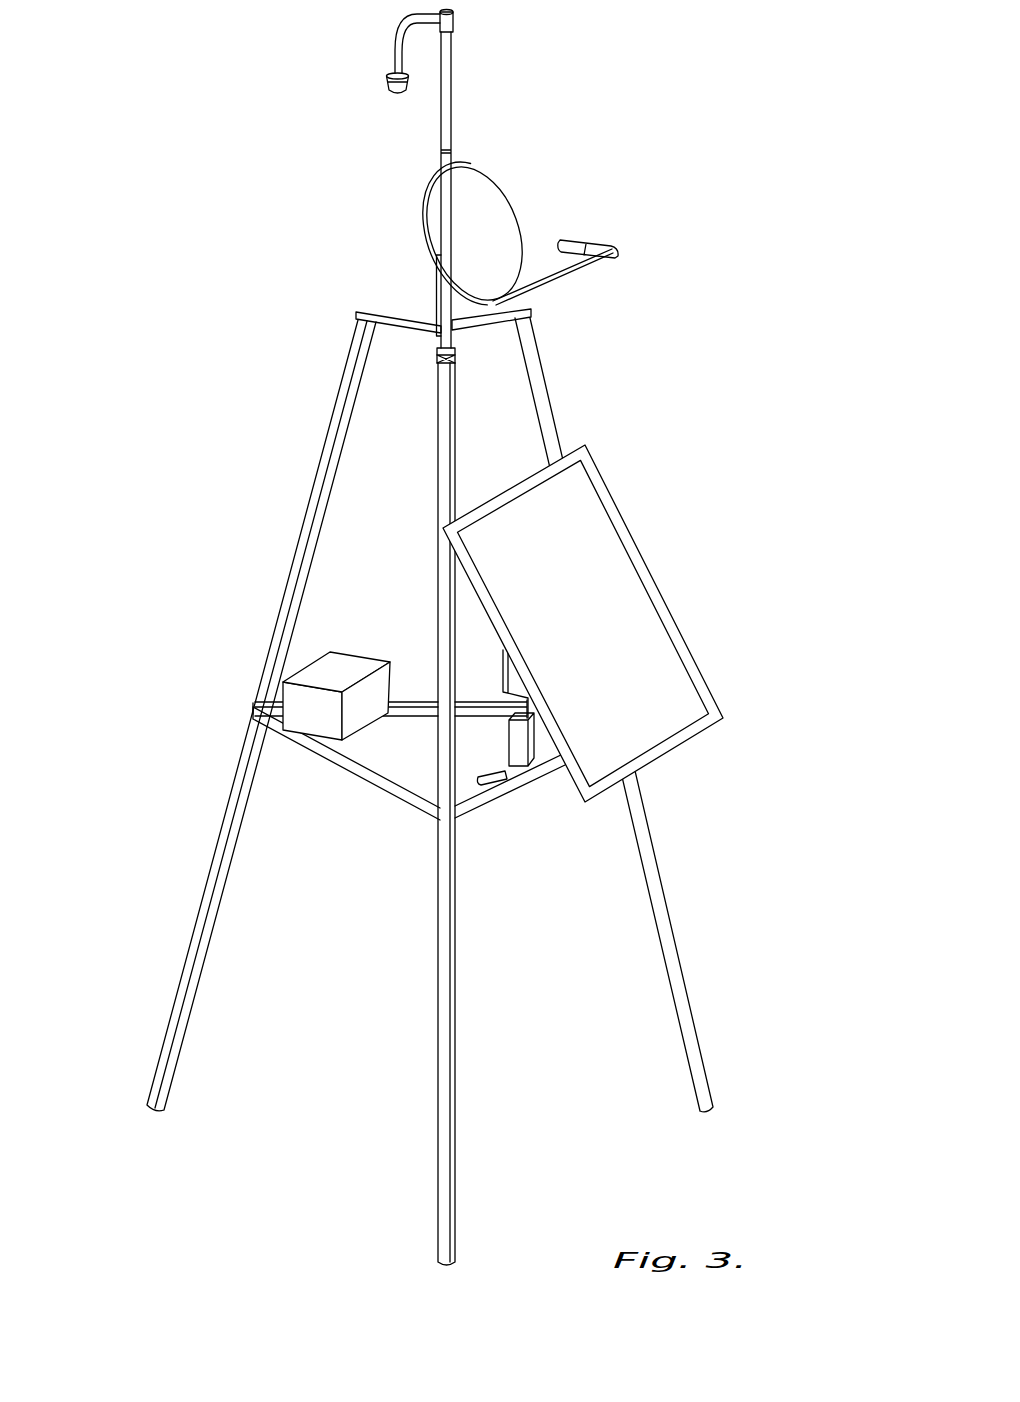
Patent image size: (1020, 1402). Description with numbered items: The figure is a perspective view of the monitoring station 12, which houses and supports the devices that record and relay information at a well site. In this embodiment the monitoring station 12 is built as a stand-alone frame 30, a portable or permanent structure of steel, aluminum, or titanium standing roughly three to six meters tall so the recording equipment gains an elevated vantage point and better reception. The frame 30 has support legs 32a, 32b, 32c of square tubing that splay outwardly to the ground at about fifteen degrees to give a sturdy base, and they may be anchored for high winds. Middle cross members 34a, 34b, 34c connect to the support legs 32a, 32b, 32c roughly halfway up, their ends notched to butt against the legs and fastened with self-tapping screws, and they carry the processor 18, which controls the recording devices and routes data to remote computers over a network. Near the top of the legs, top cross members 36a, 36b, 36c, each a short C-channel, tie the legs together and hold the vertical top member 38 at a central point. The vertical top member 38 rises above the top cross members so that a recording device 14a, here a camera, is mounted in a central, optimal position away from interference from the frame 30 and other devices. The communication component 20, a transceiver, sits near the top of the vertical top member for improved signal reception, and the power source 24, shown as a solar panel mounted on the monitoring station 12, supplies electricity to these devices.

The monitoring station 12 is at (558, 47).
The recording device 14a is at (387, 97).
The communication component 20 is at (560, 190).
The vertical top member 38 is at (437, 268).
The top cross member 36a is at (397, 313).
The top cross member 36b is at (457, 358).
The top cross member 36c is at (497, 329).
The stand-alone frame 30 is at (281, 480).
The power source 24 is at (622, 514).
The processor 18 is at (322, 674).
The middle cross member 34a is at (422, 700).
The middle cross member 34b is at (383, 788).
The middle cross member 34c is at (467, 812).
The support leg 32a is at (210, 884).
The support leg 32b is at (455, 1018).
The support leg 32c is at (668, 932).